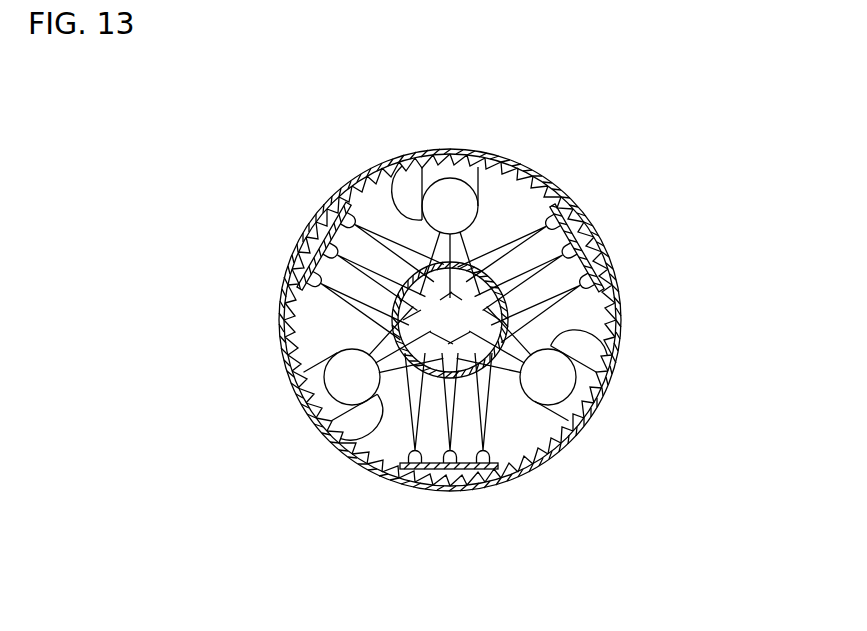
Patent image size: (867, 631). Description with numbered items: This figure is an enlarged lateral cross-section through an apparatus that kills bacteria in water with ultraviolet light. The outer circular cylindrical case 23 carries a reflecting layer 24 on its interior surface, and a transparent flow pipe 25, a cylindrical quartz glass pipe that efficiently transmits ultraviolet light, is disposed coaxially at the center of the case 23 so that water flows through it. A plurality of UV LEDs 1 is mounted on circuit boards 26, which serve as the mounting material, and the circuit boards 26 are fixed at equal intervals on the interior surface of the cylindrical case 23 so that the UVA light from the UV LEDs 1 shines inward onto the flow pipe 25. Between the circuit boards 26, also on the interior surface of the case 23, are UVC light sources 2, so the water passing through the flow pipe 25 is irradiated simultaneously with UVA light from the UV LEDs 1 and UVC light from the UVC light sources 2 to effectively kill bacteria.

The UV LED 1 is at (372, 180).
The UVC light source 2 is at (420, 168).
The cylindrical case 23 is at (525, 168).
The reflecting layer 24 is at (558, 198).
The flow pipe 25 is at (290, 343).
The circuit board 26 is at (320, 240).